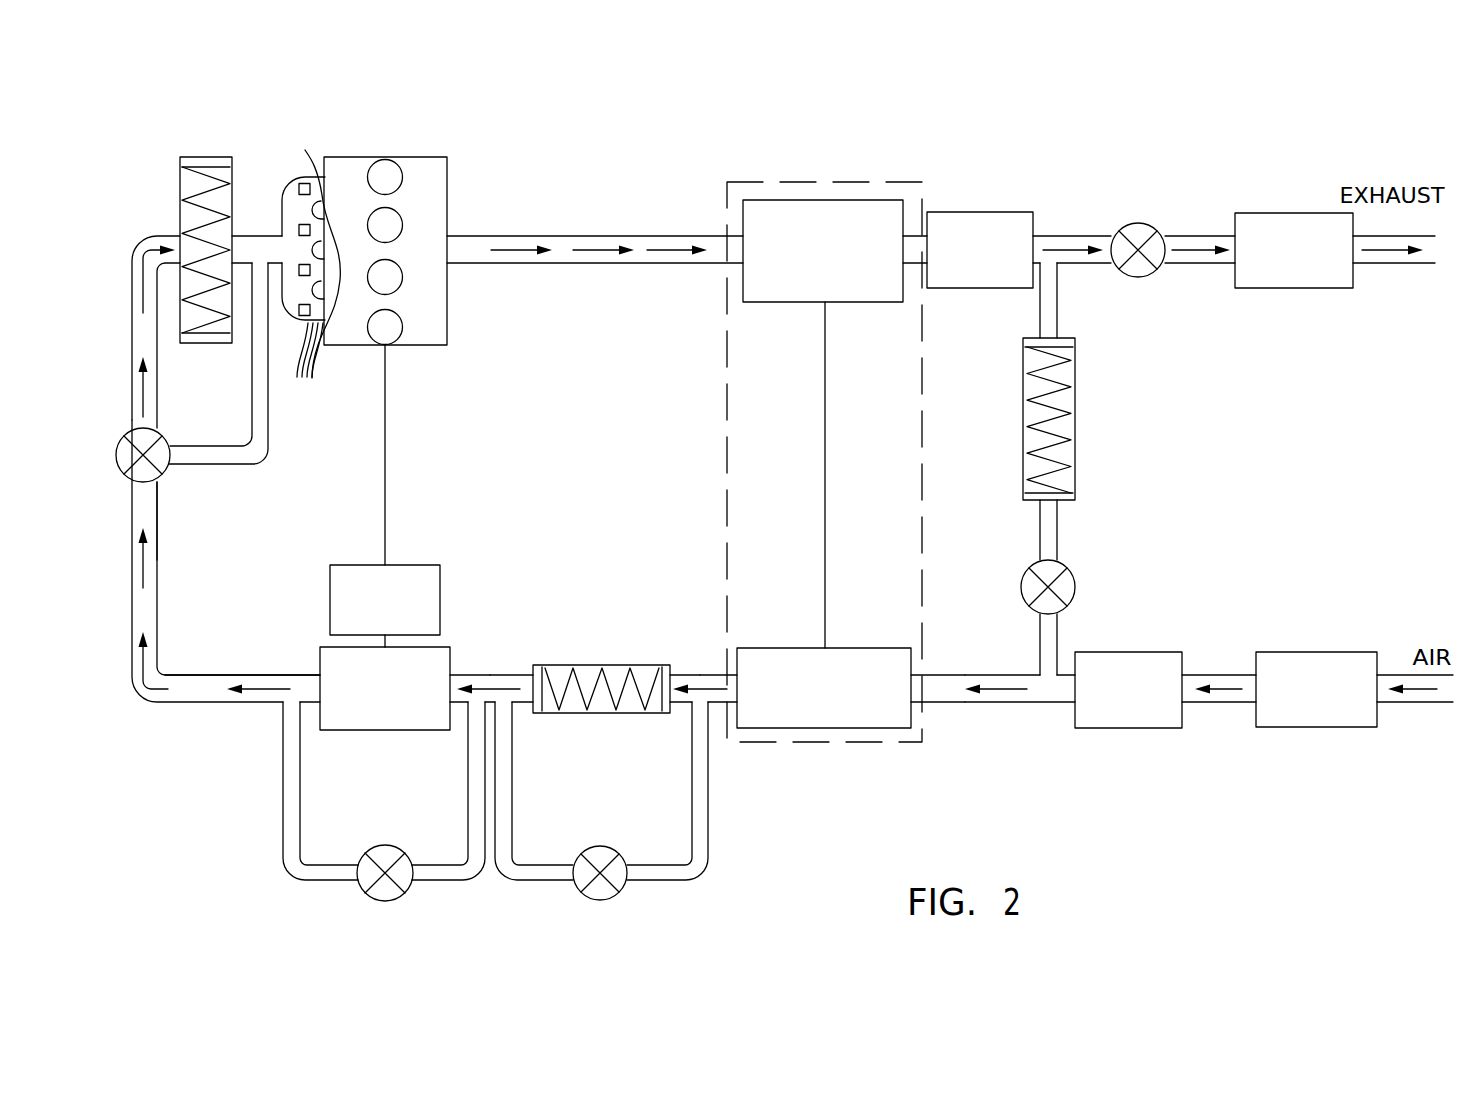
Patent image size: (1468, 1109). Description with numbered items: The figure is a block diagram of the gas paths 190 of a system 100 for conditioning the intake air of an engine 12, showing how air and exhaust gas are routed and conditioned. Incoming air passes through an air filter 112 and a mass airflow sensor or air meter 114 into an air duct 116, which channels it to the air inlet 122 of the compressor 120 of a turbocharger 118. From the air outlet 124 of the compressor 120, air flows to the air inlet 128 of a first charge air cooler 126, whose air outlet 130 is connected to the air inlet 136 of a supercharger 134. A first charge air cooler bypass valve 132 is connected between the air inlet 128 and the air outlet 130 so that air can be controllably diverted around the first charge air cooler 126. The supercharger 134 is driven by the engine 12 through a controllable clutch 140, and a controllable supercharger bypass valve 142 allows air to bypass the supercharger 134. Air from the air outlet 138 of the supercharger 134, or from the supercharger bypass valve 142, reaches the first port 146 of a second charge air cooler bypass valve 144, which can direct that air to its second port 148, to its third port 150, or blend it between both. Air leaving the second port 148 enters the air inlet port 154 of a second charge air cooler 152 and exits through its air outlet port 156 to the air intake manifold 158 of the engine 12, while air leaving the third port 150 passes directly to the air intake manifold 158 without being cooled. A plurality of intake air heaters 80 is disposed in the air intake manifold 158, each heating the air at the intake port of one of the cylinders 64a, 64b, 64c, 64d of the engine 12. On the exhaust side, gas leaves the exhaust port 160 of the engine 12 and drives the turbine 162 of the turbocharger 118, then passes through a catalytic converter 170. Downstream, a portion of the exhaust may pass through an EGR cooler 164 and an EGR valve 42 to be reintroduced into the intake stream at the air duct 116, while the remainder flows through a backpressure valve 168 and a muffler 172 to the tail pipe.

The engine 12 is at (372, 172).
The EGR valve 42 is at (1022, 592).
The first cylinder 64a is at (352, 175).
The second cylinder 64b is at (397, 237).
The third cylinder 64c is at (397, 288).
The fourth cylinder 64d is at (397, 340).
The intake air heaters 80 is at (307, 362).
The system 100 is at (665, 110).
The air filter 112 is at (1345, 729).
The mass airflow sensor (air meter) 114 is at (1157, 730).
The air duct 116 is at (1050, 705).
The turbocharger 118 is at (922, 200).
The compressor 120 is at (842, 730).
The air inlet 122 is at (913, 705).
The air outlet 124 is at (737, 675).
The first charge air cooler 126 is at (583, 665).
The air inlet 128 is at (680, 675).
The air outlet 130 is at (533, 665).
The first charge air cooler bypass valve 132 is at (603, 900).
The supercharger 134 is at (378, 730).
The air inlet 136 is at (450, 675).
The air outlet 138 is at (320, 675).
The controllable clutch 140 is at (410, 565).
The supercharger bypass valve 142 is at (388, 900).
The second charge air cooler bypass valve 144 is at (125, 437).
The first port 146 is at (125, 472).
The second port 148 is at (160, 427).
The third port 150 is at (172, 467).
The second charge air cooler 152 is at (180, 180).
The air inlet port 154 is at (180, 236).
The air outlet port 156 is at (232, 236).
The air intake manifold 158 is at (305, 150).
The exhaust port 160 is at (447, 237).
The turbine 162 is at (785, 200).
The EGR cooler 164 is at (1075, 440).
The backpressure valve 168 is at (1148, 272).
The catalytic converter 170 is at (1022, 212).
The muffler 172 is at (1316, 290).
The gas paths 190 is at (705, 165).